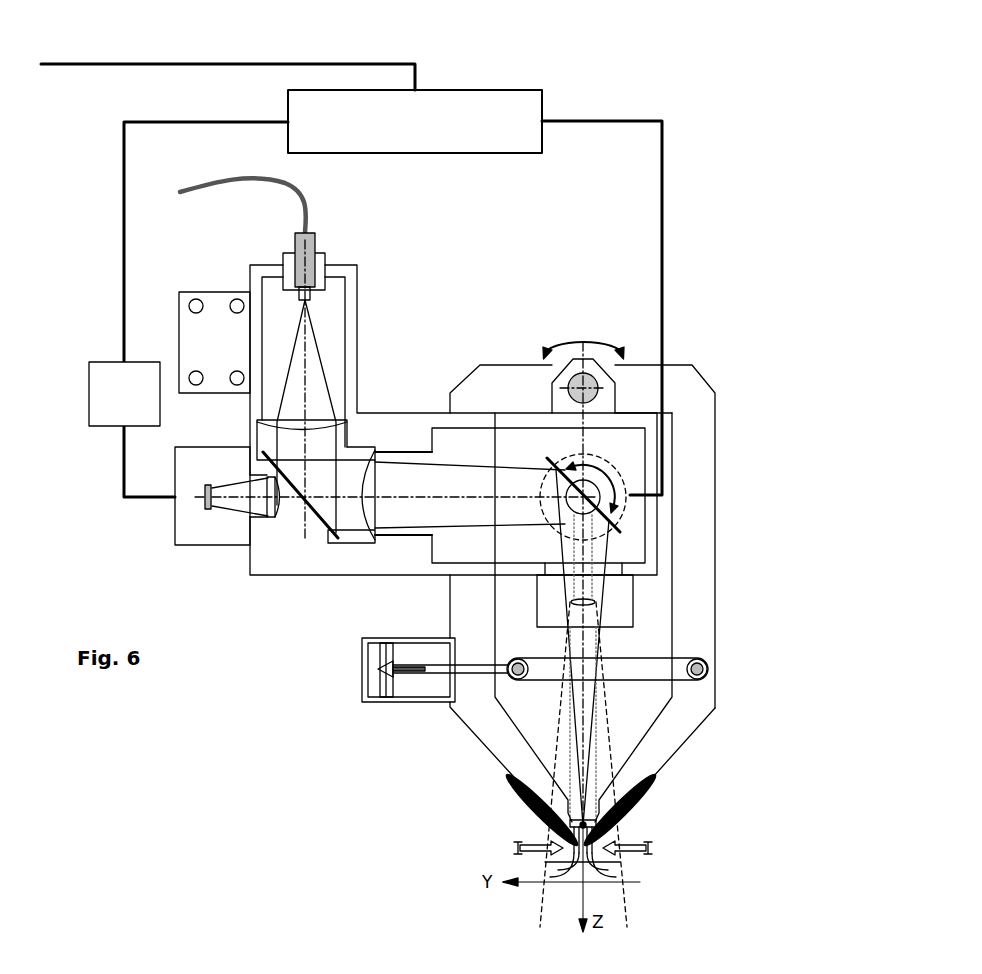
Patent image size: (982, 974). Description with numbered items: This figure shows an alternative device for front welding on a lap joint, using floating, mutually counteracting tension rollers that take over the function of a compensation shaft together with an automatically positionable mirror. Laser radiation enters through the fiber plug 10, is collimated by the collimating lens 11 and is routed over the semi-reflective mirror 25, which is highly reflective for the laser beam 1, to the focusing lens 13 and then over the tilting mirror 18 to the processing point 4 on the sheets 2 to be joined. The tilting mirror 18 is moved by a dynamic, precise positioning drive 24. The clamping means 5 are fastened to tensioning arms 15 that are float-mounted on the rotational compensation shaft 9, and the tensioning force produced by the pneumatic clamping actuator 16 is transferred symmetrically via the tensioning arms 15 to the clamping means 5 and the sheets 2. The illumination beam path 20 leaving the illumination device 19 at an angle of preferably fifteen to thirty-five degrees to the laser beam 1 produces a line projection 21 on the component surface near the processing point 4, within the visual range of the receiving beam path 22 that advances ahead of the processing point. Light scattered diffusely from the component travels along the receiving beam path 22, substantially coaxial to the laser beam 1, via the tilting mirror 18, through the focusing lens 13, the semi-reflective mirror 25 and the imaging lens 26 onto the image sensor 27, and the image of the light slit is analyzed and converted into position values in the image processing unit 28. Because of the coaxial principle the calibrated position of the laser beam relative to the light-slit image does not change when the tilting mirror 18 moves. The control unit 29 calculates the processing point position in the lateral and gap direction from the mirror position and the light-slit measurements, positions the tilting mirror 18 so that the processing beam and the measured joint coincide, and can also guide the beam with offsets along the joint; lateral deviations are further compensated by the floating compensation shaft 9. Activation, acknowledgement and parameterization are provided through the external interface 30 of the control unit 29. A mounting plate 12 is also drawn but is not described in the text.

The laser beam 1 is at (320, 357).
The sheets to be joined 2 is at (607, 877).
The processing point 4 is at (617, 837).
The clamping means 5 is at (643, 800).
The rotational compensation shaft 9 is at (592, 372).
The fiber plug 10 is at (300, 252).
The collimating lens 11 is at (356, 390).
The mounting plate 12 is at (205, 297).
The focusing lens 13 is at (365, 535).
The tensioning arms 15 is at (685, 717).
The pneumatic clamping actuator 16 is at (377, 683).
The tilting mirror 18 is at (597, 495).
The illumination device 19 is at (622, 615).
The illumination beam path 20 is at (612, 737).
The line projection 21 is at (607, 863).
The receiving beam path 22 is at (227, 505).
The positioning drive 24 is at (615, 458).
The semi-reflective mirror 25 is at (313, 515).
The imaging lens 26 is at (268, 482).
The image sensor 27 is at (203, 502).
The image processing unit 28 is at (115, 402).
The control unit 29 is at (520, 143).
The external interface 30 is at (93, 62).